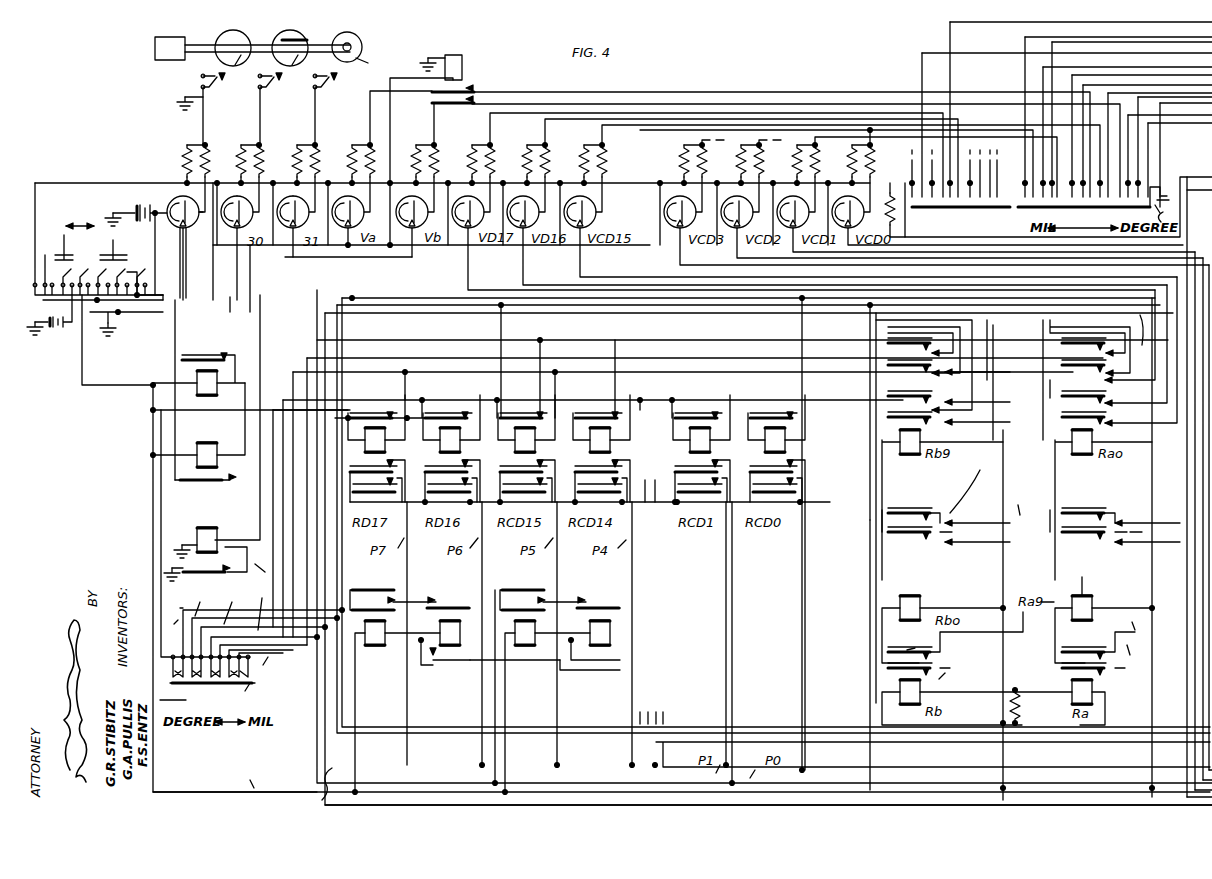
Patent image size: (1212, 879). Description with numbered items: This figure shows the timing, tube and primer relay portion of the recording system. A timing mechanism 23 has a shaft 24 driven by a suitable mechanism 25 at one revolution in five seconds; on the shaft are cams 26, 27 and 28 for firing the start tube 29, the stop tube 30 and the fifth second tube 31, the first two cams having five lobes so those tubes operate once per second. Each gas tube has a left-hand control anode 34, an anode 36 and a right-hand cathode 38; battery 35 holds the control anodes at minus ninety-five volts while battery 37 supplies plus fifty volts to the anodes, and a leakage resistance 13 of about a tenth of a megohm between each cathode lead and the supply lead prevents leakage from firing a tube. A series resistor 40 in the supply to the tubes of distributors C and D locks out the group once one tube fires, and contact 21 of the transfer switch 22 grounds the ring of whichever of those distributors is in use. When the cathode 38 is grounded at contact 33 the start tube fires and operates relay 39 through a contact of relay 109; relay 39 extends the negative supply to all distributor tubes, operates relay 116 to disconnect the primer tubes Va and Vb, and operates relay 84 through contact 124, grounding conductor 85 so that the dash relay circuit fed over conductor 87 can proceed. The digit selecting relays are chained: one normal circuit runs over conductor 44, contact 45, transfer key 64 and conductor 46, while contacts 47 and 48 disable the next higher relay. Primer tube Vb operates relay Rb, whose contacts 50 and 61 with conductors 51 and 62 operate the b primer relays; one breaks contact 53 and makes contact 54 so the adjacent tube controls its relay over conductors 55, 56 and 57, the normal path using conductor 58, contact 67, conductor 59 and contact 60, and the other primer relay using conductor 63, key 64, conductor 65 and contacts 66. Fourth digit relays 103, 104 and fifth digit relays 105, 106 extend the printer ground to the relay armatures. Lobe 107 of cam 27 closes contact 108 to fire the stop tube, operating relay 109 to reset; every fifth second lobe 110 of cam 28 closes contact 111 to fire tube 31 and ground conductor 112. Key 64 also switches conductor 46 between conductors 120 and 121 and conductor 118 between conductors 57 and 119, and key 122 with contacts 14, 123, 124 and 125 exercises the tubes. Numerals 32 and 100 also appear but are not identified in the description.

The leakage current resistance 13 is at (185, 157).
The contact 14 is at (40, 253).
The contact 21 is at (1161, 206).
The transfer switch 22 is at (1058, 129).
The timing mechanism 23 is at (180, 90).
The shaft 24 is at (267, 47).
The drive mechanism 25 is at (155, 50).
The cam 26 is at (283, 46).
The cam 27 is at (305, 33).
The cam 28 is at (362, 42).
The start tube 29 is at (178, 250).
The stop tube 30 is at (233, 218).
The fifth second tube 31 is at (289, 218).
The cam follower 32 is at (250, 61).
The contact 33 is at (222, 109).
The control anode 34 is at (172, 230).
The battery 35 is at (136, 240).
The anode 36 is at (188, 250).
The battery 37 is at (56, 332).
The cathode 38 is at (193, 230).
The relay 39 is at (220, 434).
The series resistor 40 is at (899, 169).
The conductor 44 is at (437, 293).
The contact 45 is at (391, 410).
The conductor 46 is at (878, 426).
The contact 47 is at (785, 417).
The contact 48 is at (708, 417).
The contact 50 is at (904, 645).
The conductor 51 is at (1125, 620).
The contact 53 is at (968, 481).
The contact 54 is at (915, 523).
The conductor 55 is at (551, 284).
The conductor 56 is at (1018, 519).
The conductor 57 is at (870, 515).
The conductor 58 is at (493, 283).
The conductor 59 is at (575, 342).
The contact 60 is at (451, 424).
The contact 61 is at (953, 675).
The conductor 62 is at (1136, 656).
The conductor 63 is at (445, 382).
The transfer key 64 is at (178, 690).
The conductor 65 is at (392, 292).
The contacts 66 is at (918, 353).
The contact 67 is at (1116, 342).
The relay 84 is at (220, 530).
The conductor 85 is at (403, 783).
The conductor 87 is at (243, 779).
The resistor 100 is at (212, 150).
The fourth digit relay 103 is at (528, 650).
The fourth digit relay 104 is at (610, 636).
The fifth digit relay 105 is at (365, 640).
The fifth digit relay 106 is at (448, 650).
The lobe 107 is at (310, 61).
The contact 108 is at (282, 109).
The relay 109 is at (214, 396).
The lobe 110 is at (375, 51).
The contact 111 is at (338, 109).
The conductor 112 is at (319, 288).
The relay 116 is at (462, 64).
The conductor 118 is at (258, 677).
The conductor 119 is at (566, 374).
The conductor 120 is at (156, 512).
The conductor 121 is at (410, 334).
The key 122 is at (62, 228).
The contact 123 is at (115, 228).
The contact 124 is at (140, 272).
The contact 125 is at (80, 224).